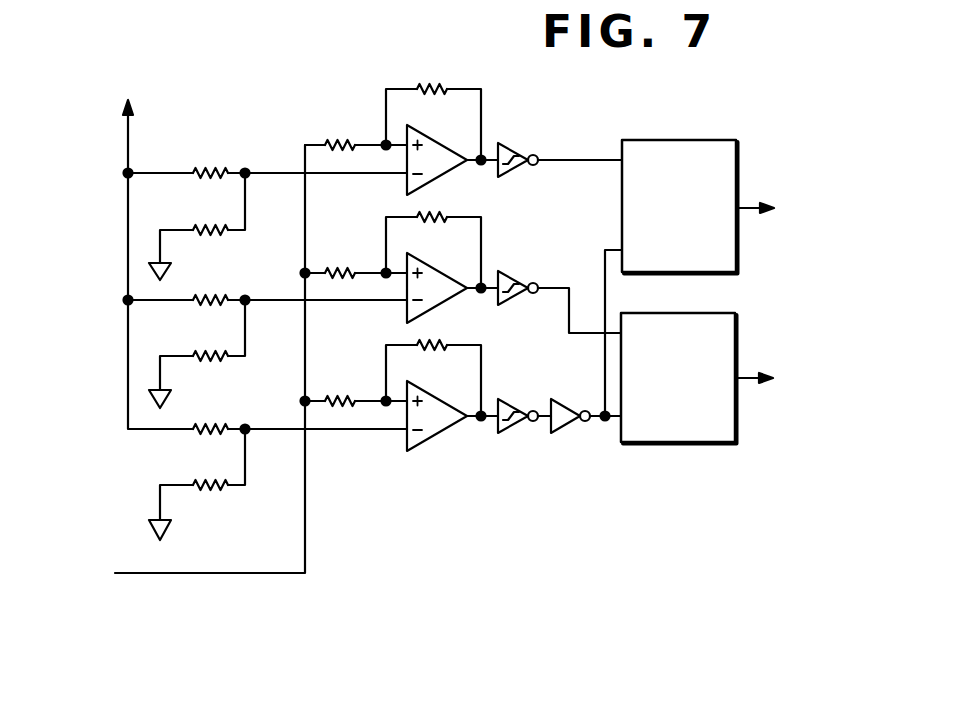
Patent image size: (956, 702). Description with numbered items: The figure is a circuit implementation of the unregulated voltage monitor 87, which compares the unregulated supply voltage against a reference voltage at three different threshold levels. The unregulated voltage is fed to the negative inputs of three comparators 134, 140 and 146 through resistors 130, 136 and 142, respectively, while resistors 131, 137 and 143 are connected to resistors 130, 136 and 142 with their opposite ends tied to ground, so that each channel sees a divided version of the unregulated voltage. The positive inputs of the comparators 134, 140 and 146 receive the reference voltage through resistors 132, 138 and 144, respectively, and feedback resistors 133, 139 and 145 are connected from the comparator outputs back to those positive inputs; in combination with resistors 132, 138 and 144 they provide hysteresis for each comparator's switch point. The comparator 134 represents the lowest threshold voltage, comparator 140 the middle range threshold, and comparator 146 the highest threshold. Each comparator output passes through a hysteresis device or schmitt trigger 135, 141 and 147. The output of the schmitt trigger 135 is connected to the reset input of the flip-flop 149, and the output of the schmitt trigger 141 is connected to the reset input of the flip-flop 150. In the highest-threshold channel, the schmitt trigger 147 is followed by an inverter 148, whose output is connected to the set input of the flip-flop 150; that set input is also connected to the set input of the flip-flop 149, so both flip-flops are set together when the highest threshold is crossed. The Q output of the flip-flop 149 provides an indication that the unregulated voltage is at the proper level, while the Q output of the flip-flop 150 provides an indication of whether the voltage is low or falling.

The unregulated voltage monitor 87 is at (549, 503).
The resistor 130 is at (204, 167).
The resistor 131 is at (213, 223).
The resistor 132 is at (348, 139).
The feedback resistor 133 is at (432, 85).
The comparator 134 is at (443, 140).
The hysteresis device or schmitt trigger 135 is at (515, 143).
The resistor 136 is at (208, 293).
The resistor 137 is at (209, 350).
The resistor 138 is at (345, 267).
The feedback resistor 139 is at (423, 213).
The comparator 140 is at (443, 270).
The hysteresis device or schmitt trigger 141 is at (515, 272).
The resistor 142 is at (205, 434).
The resistor 143 is at (207, 491).
The resistor 144 is at (345, 395).
The feedback resistor 145 is at (425, 342).
The comparator 146 is at (445, 398).
The hysteresis device or schmitt trigger 147 is at (512, 435).
The inverter 148 is at (562, 436).
The flip-flop 149 is at (698, 140).
The flip-flop 150 is at (703, 443).